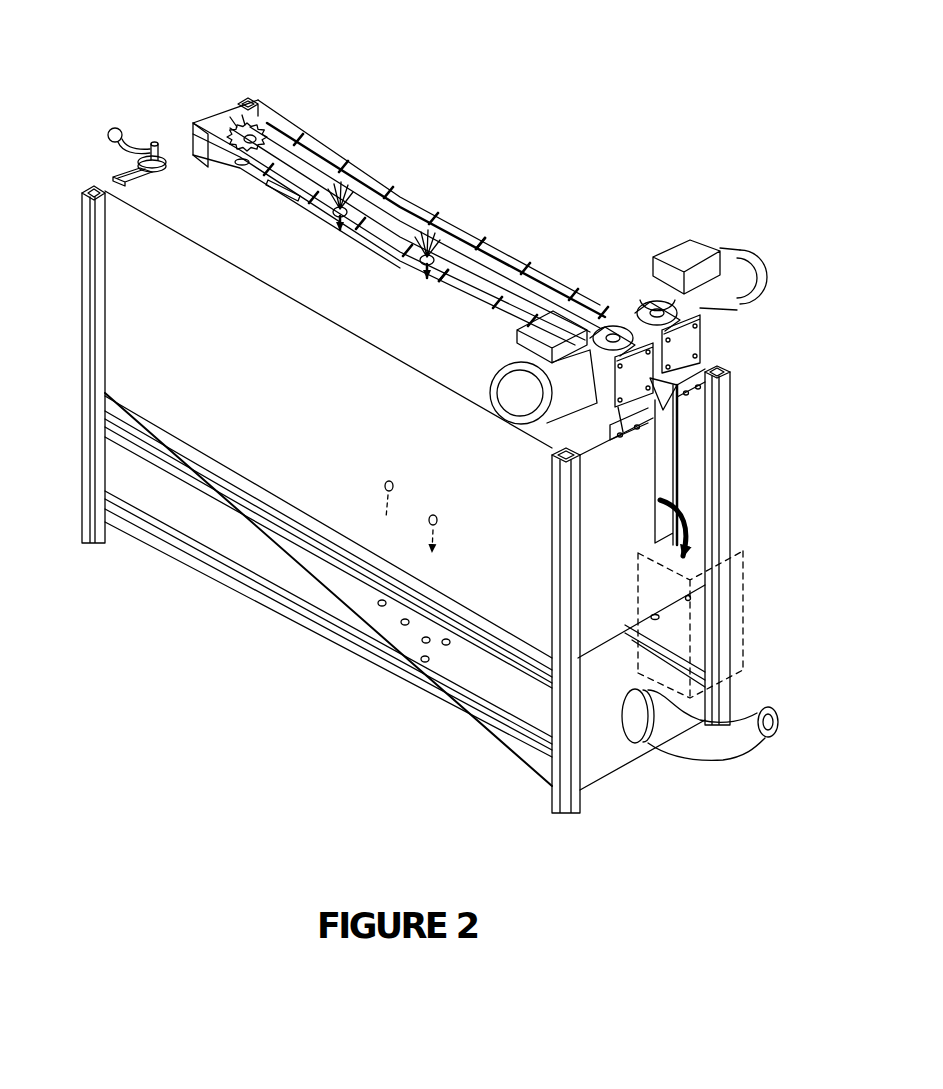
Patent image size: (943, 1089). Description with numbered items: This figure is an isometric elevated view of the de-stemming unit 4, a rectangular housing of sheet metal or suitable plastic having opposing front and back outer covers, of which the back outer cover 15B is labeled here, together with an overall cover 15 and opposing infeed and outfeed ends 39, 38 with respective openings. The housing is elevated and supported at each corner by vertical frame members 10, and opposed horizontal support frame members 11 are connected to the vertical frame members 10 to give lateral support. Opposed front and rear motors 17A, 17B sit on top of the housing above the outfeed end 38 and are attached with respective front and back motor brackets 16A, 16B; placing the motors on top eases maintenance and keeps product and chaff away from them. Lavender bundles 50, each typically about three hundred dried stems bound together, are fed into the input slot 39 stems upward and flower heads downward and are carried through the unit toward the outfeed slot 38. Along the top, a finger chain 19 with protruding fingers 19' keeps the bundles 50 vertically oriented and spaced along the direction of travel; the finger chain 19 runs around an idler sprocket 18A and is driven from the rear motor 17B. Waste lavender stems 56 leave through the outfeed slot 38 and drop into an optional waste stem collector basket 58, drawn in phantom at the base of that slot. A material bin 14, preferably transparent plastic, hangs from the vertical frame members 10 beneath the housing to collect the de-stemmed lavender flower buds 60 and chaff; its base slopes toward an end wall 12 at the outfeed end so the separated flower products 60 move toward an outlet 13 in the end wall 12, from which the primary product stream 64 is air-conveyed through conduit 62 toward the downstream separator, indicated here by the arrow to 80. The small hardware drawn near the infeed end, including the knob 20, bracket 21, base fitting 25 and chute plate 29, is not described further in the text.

The de-stemming unit 4 is at (182, 738).
The vertical frame members 10 is at (244, 98).
The horizontal support frame members 11 is at (100, 433).
The end wall 12 is at (587, 753).
The outlet 13 is at (648, 742).
The material bin 14 is at (493, 689).
The front panel 15 is at (145, 305).
The back outer cover 15B is at (449, 212).
The front motor bracket 16A is at (693, 378).
The back motor bracket 16B is at (683, 347).
The front motor 17A is at (540, 330).
The rear motor 17B is at (682, 258).
The idler sprocket 18A is at (266, 131).
The finger chain 19 is at (400, 222).
The protruding fingers 19' is at (509, 212).
The handle lever 20 is at (104, 122).
The bracket 21 is at (125, 175).
The pivot base 25 is at (163, 167).
The chute plate 29 is at (690, 444).
The outfeed end 38 is at (663, 470).
The infeed end 39 is at (168, 146).
The lavender bundles 50 is at (428, 234).
The waste lavender stems 56 is at (700, 500).
The waste stem collector basket 58 is at (747, 551).
The de-stemmed lavender flower buds 60 is at (426, 641).
The conduit 62 is at (737, 732).
The primary product stream 64 is at (788, 728).
The vacuum source (to 80) 80 is at (774, 718).